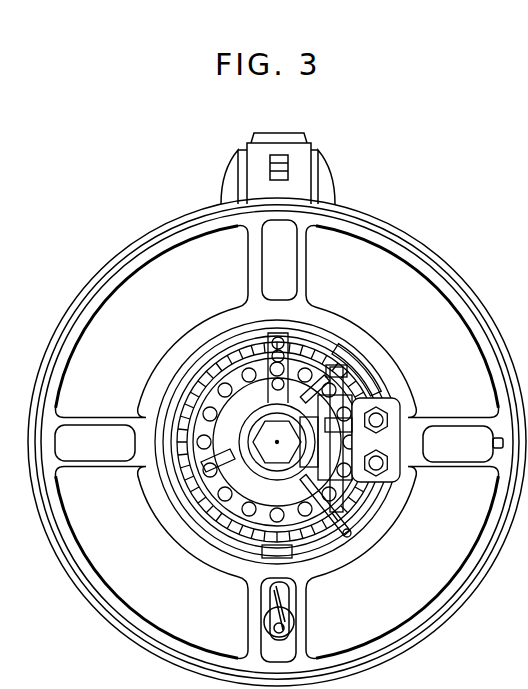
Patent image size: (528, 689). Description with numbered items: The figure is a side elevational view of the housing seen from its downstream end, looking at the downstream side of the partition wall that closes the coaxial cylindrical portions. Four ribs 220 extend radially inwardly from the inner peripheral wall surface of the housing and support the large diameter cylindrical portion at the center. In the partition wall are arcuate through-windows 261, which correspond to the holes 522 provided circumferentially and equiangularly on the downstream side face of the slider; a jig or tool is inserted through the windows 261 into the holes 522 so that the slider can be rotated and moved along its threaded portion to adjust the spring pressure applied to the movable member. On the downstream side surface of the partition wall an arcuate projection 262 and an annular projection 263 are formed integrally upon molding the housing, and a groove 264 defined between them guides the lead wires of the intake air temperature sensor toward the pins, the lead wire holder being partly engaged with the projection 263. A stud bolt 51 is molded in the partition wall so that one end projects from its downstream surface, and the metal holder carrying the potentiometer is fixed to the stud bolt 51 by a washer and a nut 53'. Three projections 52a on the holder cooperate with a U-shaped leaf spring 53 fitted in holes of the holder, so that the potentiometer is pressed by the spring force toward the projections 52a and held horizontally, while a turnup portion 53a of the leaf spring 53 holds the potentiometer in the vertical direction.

The ribs 220 is at (300, 287).
The annular projection 263 is at (222, 347).
The arcuate through-windows 261 is at (213, 392).
The arcuate projection 262 is at (200, 496).
The holes 522 is at (190, 406).
The groove 264 is at (305, 560).
The stud bolt 51 is at (398, 472).
The projections 52a is at (343, 420).
The nut 53' is at (402, 438).
The U-shaped leaf spring 53 is at (371, 513).
The turnup portion 53a is at (348, 536).